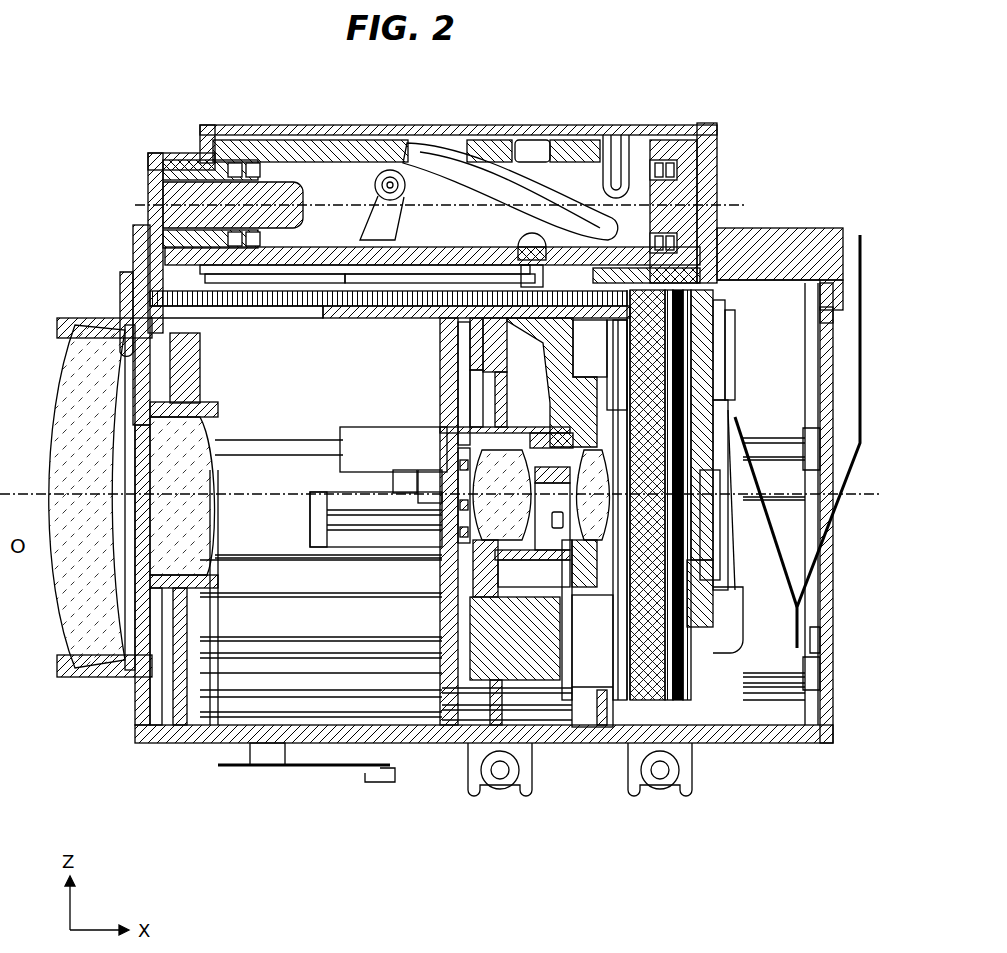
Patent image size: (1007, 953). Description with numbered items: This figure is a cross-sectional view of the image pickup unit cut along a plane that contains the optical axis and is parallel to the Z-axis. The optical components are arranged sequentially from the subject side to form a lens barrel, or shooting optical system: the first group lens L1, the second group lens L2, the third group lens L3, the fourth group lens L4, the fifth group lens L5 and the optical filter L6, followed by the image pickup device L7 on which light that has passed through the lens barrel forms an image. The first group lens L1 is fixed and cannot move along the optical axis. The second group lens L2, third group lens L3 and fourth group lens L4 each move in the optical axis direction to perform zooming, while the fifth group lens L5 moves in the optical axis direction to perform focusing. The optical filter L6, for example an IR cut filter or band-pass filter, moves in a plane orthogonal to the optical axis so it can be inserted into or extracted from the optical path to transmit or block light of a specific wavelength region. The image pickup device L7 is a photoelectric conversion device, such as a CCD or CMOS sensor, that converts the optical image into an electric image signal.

The first group lens L1 is at (84, 680).
The second group lens L2 is at (188, 555).
The third group lens L3 is at (497, 513).
The fourth group lens L4 is at (588, 530).
The fifth group lens L5 is at (607, 700).
The optical filter L6 is at (720, 302).
The image pickup device L7 is at (733, 420).